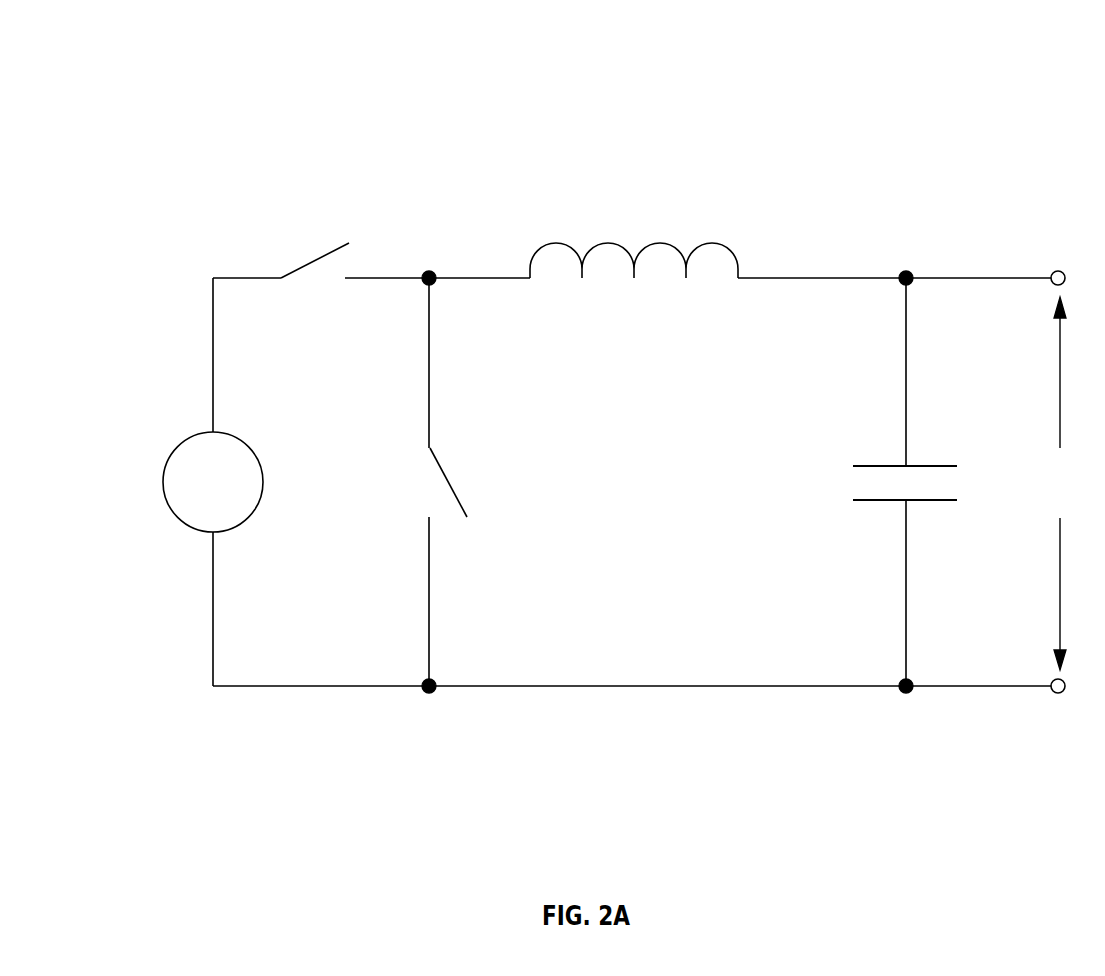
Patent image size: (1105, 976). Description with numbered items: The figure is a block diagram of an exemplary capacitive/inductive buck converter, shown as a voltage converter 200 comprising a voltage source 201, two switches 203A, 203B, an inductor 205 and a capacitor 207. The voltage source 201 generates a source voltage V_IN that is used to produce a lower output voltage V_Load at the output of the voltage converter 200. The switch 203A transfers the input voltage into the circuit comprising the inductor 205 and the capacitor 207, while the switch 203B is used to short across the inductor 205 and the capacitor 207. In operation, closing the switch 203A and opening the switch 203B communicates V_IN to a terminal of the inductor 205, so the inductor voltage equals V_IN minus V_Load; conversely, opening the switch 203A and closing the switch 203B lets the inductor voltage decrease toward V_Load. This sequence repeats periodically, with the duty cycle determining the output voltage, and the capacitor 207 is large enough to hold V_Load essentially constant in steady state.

The voltage converter 200 is at (118, 95).
The voltage source 201 is at (184, 438).
The switch 203A is at (316, 261).
The switch 203B is at (444, 472).
The inductor 205 is at (700, 244).
The capacitor 207 is at (862, 465).